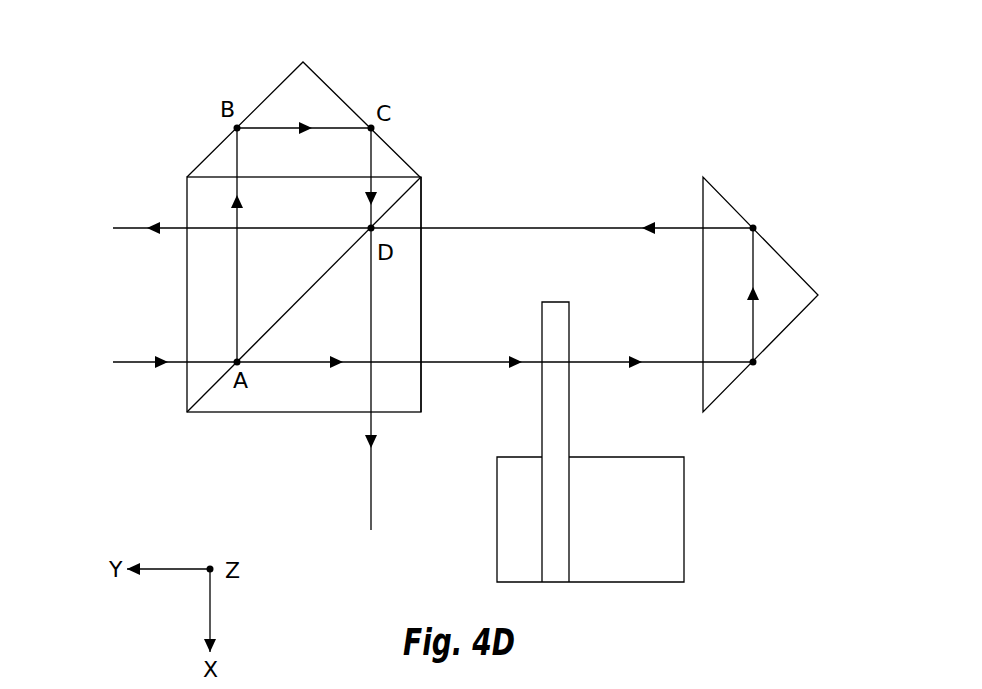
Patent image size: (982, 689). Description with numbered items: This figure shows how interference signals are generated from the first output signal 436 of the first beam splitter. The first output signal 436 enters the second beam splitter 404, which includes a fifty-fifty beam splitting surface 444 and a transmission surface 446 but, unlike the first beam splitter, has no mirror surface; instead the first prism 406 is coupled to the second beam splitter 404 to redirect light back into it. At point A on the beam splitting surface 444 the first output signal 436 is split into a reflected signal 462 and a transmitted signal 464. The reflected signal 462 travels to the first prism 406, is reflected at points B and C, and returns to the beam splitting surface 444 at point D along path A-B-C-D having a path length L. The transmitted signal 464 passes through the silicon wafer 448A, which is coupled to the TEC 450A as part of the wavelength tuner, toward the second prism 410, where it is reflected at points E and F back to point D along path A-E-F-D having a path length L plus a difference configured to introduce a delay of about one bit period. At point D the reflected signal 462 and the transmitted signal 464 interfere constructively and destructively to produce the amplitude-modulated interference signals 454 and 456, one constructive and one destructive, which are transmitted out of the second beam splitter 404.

The first prism 406 is at (317, 73).
The second beam splitter 404 is at (254, 446).
The 50:50 beam splitting surface 444 is at (290, 310).
The transmission surface 446 is at (421, 315).
The reflected signal 462 is at (238, 283).
The interference signal 454 is at (135, 225).
The first output signal 436 is at (133, 365).
The transmitted signal 464 is at (563, 228).
The interference signal 456 is at (372, 507).
The silicon wafer 448A is at (569, 423).
The TEC 450A is at (684, 518).
The second prism 410 is at (788, 263).